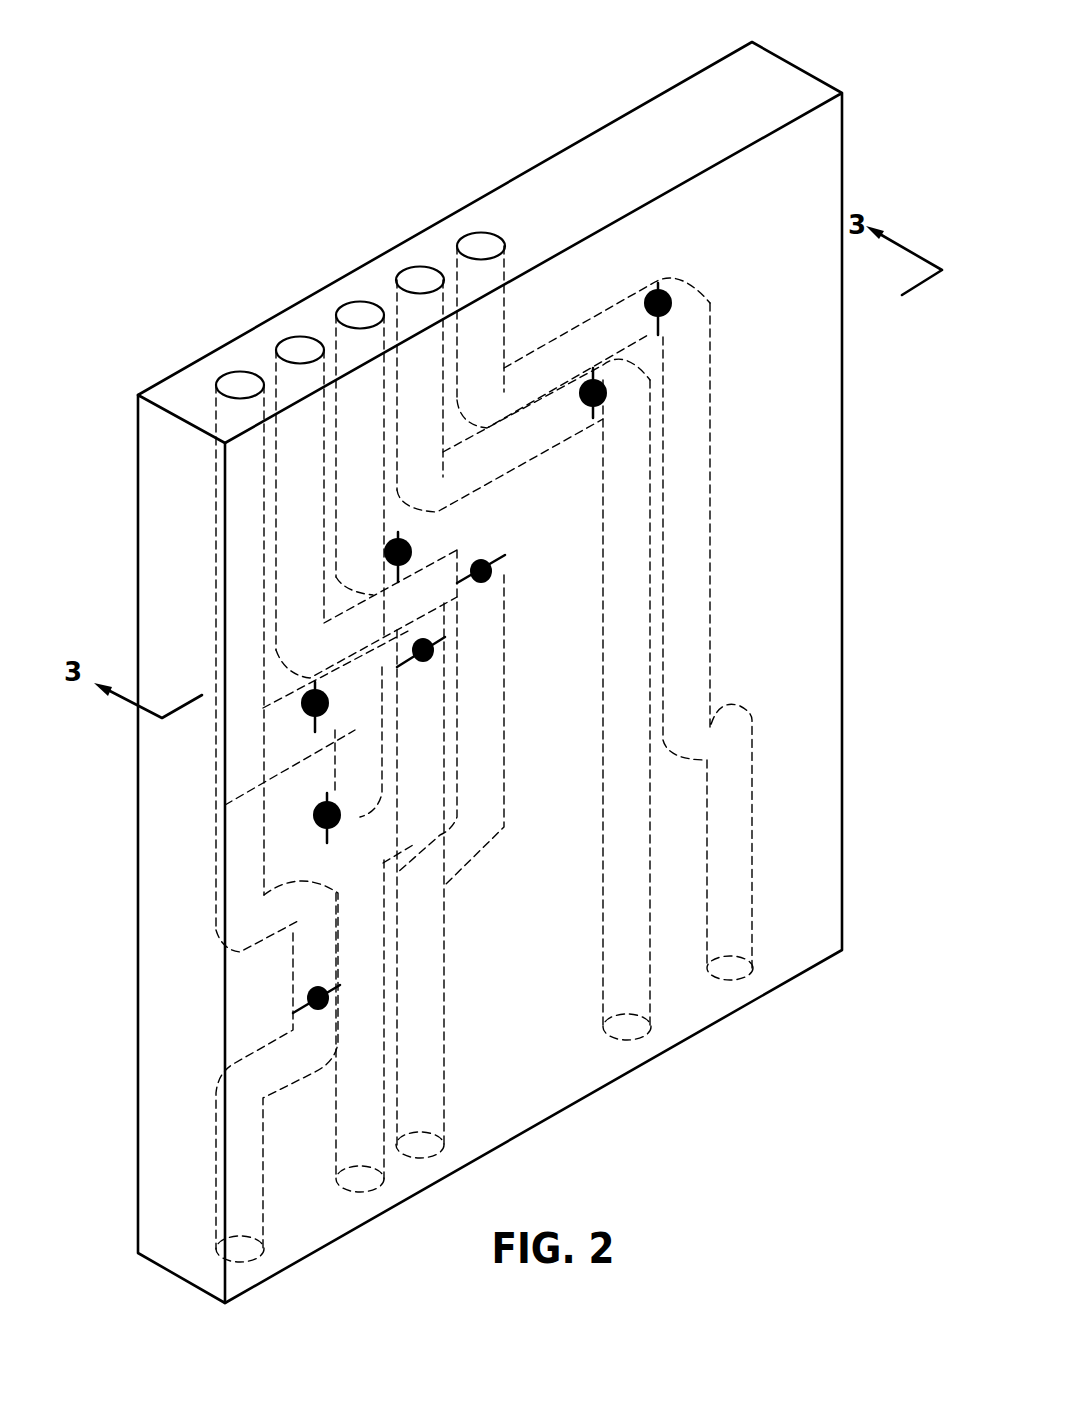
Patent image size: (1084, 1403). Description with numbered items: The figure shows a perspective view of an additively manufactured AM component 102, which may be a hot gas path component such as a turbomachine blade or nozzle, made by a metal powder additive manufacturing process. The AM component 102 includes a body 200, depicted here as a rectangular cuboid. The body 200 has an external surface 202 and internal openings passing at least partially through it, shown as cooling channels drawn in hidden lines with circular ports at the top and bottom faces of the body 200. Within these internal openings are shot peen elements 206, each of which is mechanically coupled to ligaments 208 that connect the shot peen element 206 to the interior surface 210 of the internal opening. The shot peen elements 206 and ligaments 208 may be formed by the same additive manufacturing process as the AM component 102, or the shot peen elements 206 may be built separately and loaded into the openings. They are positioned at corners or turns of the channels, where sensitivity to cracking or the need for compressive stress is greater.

The AM component 102 is at (454, 651).
The body 200 is at (403, 754).
The external surface 202 is at (137, 822).
The shot peen element 206 is at (673, 303).
The ligament 208 is at (660, 290).
The interior surface 210 is at (505, 530).